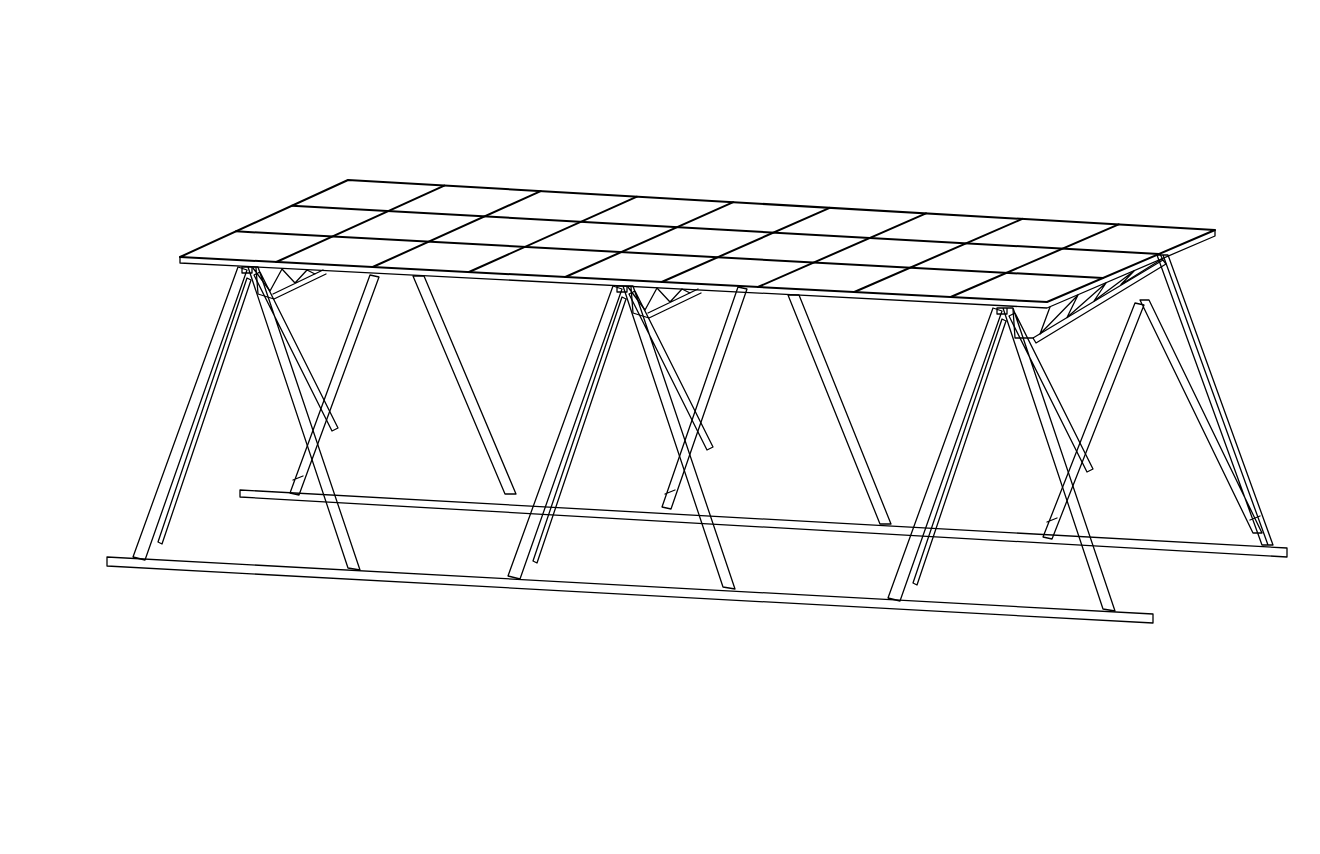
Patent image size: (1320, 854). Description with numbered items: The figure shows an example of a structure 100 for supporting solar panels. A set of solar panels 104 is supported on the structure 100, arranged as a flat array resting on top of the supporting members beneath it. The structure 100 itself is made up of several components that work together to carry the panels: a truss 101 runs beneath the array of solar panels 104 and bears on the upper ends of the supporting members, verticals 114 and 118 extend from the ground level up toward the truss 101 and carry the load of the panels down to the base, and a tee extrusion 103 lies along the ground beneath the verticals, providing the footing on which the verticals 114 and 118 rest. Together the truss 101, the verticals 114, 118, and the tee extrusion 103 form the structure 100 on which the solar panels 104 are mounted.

The structure 100 is at (374, 74).
The truss 101 is at (1100, 308).
The tee extrusion 103 is at (406, 590).
The solar panels 104 is at (622, 194).
The vertical 114 is at (192, 392).
The vertical 118 is at (213, 423).